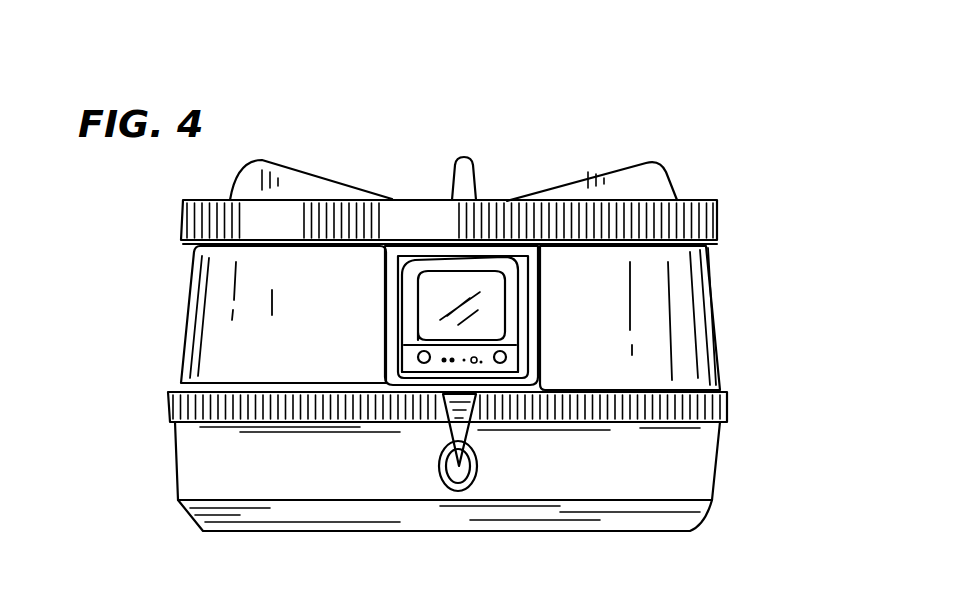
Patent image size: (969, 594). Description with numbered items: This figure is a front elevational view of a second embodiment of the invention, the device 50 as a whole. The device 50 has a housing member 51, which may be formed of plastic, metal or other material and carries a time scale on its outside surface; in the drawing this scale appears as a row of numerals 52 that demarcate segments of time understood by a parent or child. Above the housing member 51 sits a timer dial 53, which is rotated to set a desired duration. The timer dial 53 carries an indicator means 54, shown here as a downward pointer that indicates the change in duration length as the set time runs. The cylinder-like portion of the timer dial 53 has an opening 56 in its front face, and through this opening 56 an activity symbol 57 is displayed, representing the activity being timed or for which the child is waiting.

The device 50 is at (725, 363).
The housing member 51 is at (722, 468).
The time indicia numerals 52 is at (563, 482).
The timer dial 53 is at (168, 403).
The indicator means 54 is at (452, 427).
The opening 56 is at (527, 283).
The activity symbol 57 is at (457, 282).